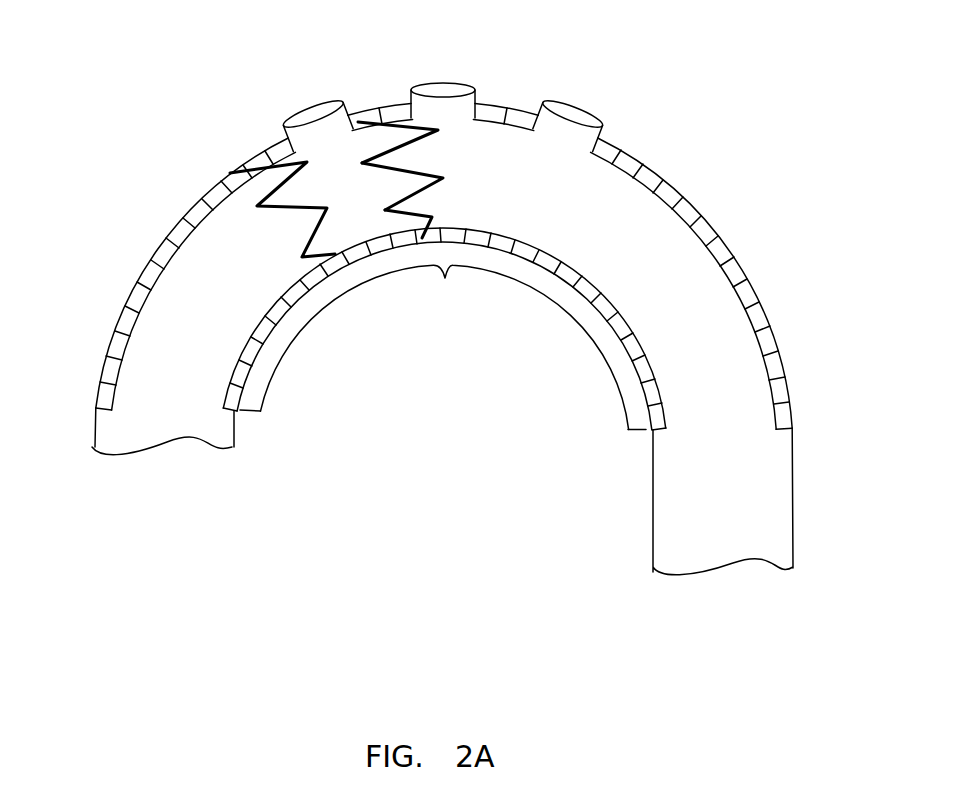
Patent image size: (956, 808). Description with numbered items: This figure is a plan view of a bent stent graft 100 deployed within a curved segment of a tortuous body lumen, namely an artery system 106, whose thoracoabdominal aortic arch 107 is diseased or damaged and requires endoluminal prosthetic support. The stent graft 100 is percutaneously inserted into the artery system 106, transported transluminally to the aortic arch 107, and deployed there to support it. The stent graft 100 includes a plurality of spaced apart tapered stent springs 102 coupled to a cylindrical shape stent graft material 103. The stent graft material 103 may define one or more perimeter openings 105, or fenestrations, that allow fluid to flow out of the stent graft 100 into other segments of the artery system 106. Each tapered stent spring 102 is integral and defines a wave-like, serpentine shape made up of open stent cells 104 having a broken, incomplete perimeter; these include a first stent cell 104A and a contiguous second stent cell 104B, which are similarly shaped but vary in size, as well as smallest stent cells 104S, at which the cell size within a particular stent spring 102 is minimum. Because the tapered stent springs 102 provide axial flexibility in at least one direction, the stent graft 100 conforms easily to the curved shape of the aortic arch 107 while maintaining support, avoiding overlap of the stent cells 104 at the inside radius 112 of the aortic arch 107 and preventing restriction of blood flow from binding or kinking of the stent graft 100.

The stent graft 100 is at (447, 301).
The tapered stent springs 102 is at (240, 202).
The stent graft material 103 is at (110, 347).
The stent cells 104 is at (383, 200).
The first stent cell 104A is at (403, 142).
The second stent cell 104B is at (440, 179).
The smallest stent cells 104S is at (424, 217).
The perimeter openings 105 is at (557, 102).
The artery system 106 is at (668, 545).
The aortic arch 107 is at (443, 347).
The inside radius 112 is at (531, 279).